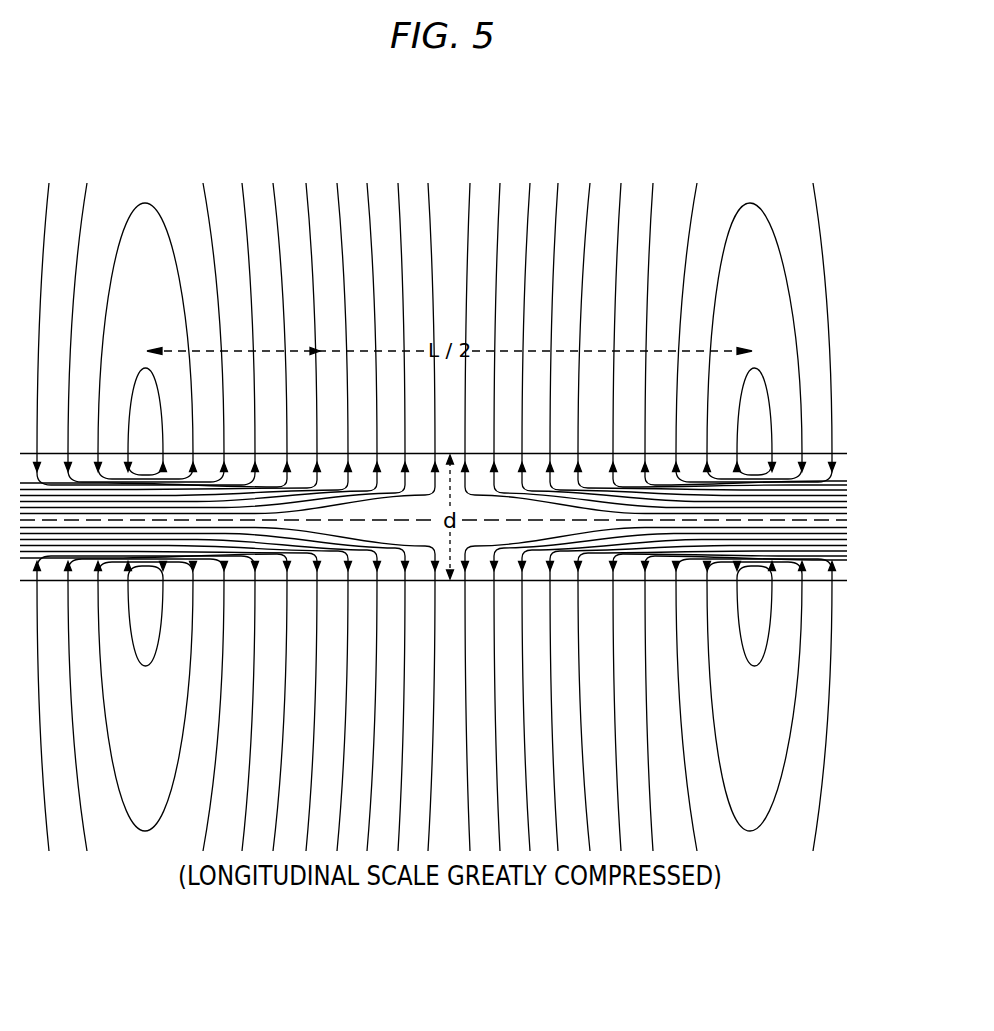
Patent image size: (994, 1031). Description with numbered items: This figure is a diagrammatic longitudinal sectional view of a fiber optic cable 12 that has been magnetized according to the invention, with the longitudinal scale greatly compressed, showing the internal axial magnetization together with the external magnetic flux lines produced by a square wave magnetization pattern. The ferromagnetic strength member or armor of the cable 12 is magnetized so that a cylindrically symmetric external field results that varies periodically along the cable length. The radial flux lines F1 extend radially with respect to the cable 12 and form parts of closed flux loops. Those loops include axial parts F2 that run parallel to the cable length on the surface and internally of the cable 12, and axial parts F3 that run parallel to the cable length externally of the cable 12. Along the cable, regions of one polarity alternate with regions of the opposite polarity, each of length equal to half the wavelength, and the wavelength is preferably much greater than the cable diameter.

The cable 12 is at (841, 453).
The radial flux lines F1 is at (500, 186).
The axial parts of flux loops F2 is at (852, 472).
The external axial parts of flux loops F3 is at (147, 203).